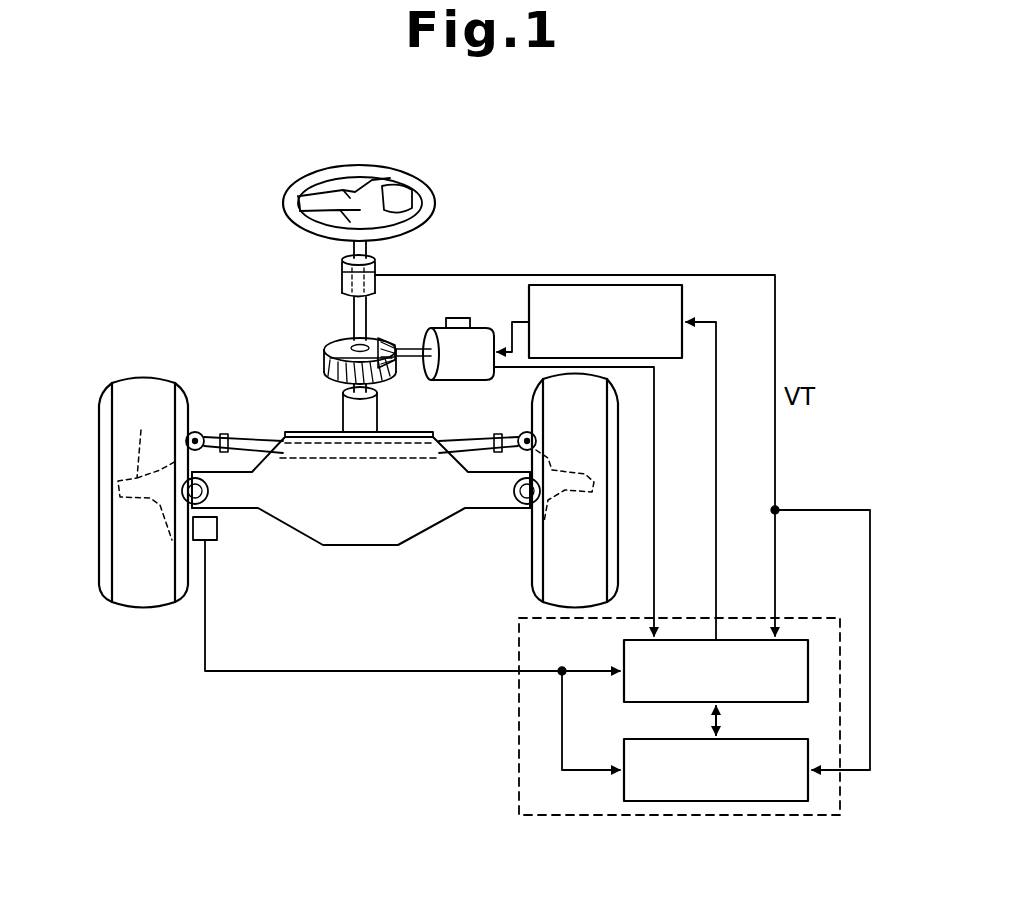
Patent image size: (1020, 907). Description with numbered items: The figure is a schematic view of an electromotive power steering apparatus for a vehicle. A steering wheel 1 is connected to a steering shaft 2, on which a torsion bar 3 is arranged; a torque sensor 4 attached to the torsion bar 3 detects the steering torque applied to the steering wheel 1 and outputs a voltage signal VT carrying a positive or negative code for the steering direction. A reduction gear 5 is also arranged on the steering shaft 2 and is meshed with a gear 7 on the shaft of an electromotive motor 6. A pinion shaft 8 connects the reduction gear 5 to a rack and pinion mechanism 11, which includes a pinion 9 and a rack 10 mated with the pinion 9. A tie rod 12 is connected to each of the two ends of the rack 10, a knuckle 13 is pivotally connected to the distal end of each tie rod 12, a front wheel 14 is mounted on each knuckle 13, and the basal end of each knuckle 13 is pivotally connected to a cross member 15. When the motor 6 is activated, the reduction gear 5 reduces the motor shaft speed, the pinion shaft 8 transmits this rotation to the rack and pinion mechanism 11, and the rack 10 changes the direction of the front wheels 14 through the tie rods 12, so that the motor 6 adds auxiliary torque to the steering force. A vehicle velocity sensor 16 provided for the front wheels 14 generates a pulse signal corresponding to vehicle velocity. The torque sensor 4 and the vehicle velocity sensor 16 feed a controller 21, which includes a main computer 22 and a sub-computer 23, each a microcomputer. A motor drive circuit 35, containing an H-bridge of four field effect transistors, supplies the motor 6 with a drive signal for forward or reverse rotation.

The steering wheel 1 is at (436, 196).
The steering shaft 2 is at (376, 261).
The torsion bar 3 is at (342, 270).
The torque sensor 4 is at (345, 286).
The reduction gear 5 is at (338, 350).
The electromotive motor 6 is at (493, 330).
The gear 7 is at (390, 340).
The pinion shaft 8 is at (344, 394).
The pinion 9 is at (378, 401).
The rack 10 is at (393, 450).
The rack and pinion mechanism 11 is at (254, 437).
The tie rod 12 is at (217, 437).
The knuckle 13 is at (136, 478).
The front wheel 14 is at (99, 449).
The cross member 15 is at (298, 534).
The vehicle velocity sensor 16 is at (218, 529).
The controller 21 is at (826, 618).
The main computer 22 is at (624, 650).
The sub-computer 23 is at (692, 802).
The motor drive circuit 35 is at (683, 300).